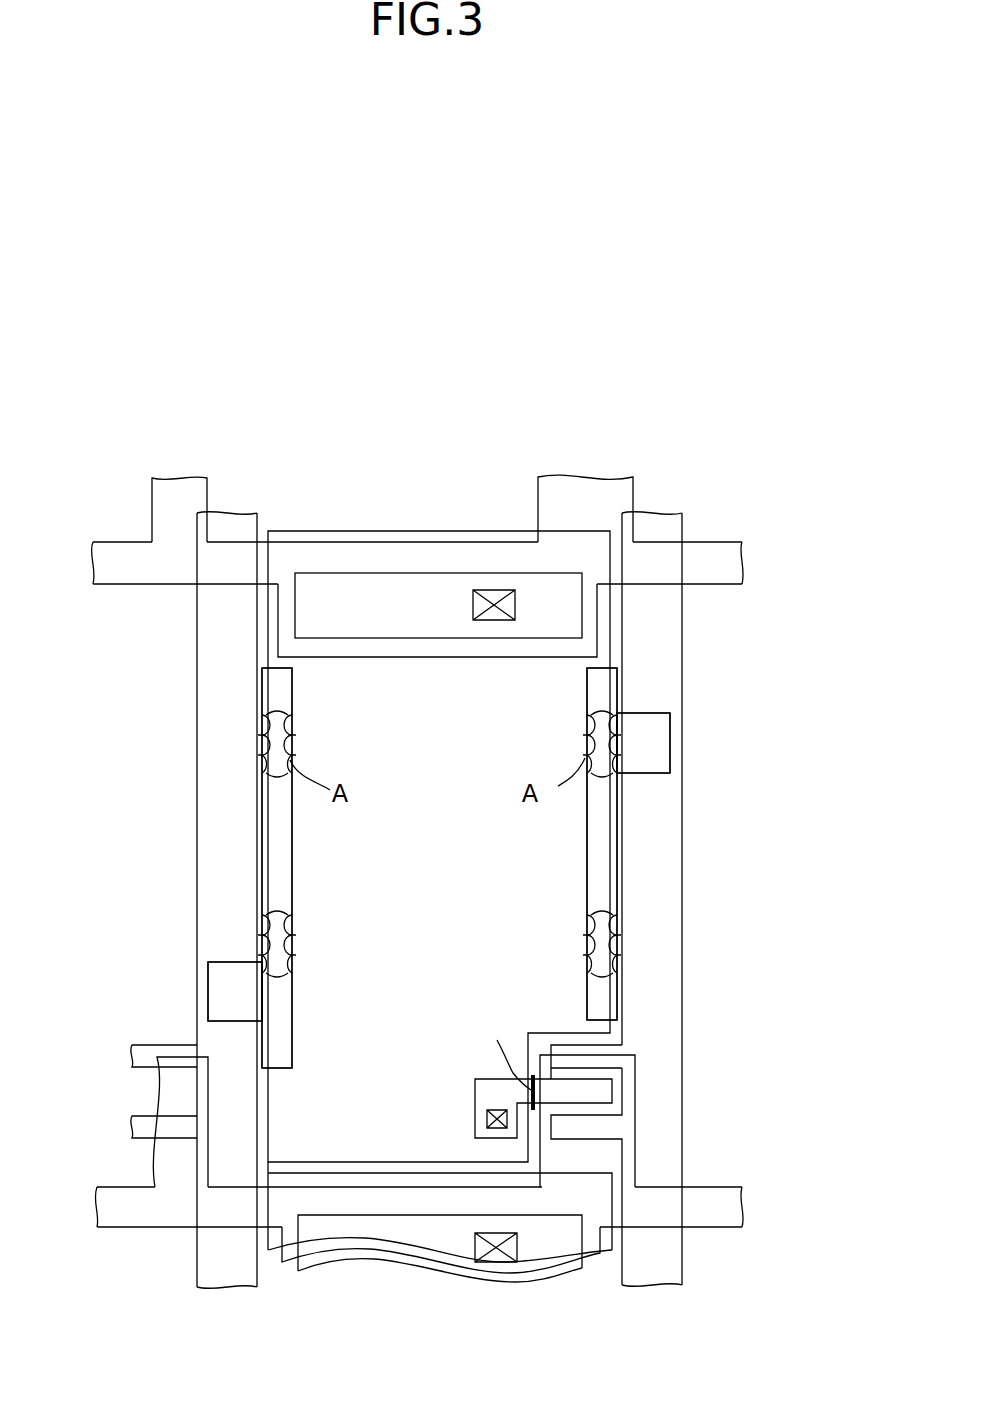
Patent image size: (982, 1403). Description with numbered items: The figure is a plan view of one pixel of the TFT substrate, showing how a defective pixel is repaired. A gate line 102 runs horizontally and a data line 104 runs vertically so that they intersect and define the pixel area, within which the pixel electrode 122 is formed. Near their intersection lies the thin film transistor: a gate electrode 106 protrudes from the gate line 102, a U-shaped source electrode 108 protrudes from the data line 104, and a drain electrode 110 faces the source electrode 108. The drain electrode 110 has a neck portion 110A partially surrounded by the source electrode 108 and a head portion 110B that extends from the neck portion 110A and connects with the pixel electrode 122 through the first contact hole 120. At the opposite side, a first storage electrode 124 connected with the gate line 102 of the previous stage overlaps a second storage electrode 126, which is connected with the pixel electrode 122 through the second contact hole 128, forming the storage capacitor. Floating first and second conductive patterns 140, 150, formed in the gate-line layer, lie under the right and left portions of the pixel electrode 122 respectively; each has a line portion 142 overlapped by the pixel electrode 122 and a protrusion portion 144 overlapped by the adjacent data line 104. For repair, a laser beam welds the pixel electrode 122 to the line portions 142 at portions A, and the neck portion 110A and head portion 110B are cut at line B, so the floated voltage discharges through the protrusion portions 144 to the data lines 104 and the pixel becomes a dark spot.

The gate line 102 is at (740, 562).
The data line 104 is at (653, 1282).
The gate electrode 106 is at (635, 1067).
The source electrode 108 is at (583, 1050).
The drain electrode 110 is at (427, 1000).
The neck portion 110A is at (587, 1078).
The head portion 110B is at (475, 1093).
The first contact hole 120 is at (487, 1118).
The pixel electrode 122 is at (610, 623).
The first storage electrode 124 is at (352, 657).
The second storage electrode 126 is at (437, 572).
The second contact hole 128 is at (482, 620).
The first conductive pattern 140 is at (792, 833).
The line portion 142 is at (618, 887).
The protrusion portion 144 is at (643, 775).
The second conductive pattern 150 is at (85, 910).